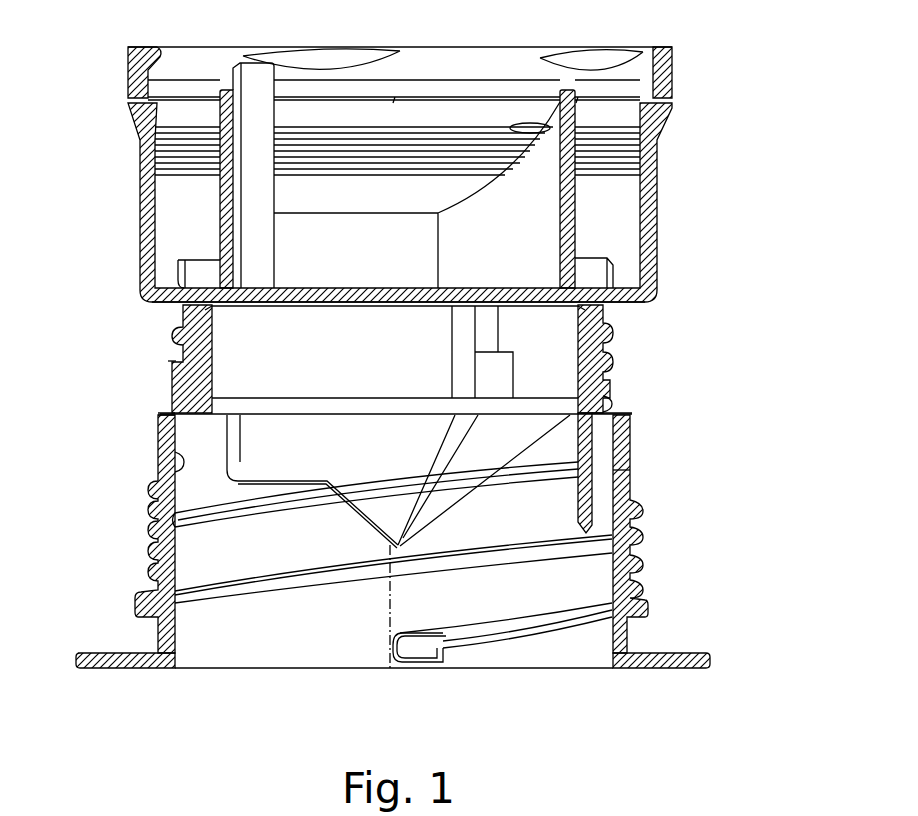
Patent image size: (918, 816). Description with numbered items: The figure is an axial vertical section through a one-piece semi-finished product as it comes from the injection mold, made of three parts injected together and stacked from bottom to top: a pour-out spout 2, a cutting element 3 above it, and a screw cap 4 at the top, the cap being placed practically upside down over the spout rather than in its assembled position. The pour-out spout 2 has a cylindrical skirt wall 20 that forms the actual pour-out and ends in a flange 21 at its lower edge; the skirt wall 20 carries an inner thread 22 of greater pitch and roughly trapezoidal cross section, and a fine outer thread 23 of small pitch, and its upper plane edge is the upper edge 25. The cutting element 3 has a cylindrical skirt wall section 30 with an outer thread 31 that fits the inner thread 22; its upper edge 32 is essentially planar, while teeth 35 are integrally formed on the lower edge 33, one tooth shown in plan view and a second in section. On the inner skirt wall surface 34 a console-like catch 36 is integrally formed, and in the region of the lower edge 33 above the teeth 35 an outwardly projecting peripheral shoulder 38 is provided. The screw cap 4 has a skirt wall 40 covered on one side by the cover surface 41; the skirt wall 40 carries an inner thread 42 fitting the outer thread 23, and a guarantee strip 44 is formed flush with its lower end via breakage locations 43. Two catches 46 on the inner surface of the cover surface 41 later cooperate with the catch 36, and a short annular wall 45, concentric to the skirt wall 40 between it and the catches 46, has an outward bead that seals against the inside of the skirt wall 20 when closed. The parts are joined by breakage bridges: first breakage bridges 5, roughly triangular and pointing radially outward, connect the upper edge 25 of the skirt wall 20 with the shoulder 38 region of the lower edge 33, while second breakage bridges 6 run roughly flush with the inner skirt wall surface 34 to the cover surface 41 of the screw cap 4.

The pour-out spout 2 is at (411, 541).
The cutting element 3 is at (412, 390).
The screw cap 4 is at (409, 181).
The first breakage bridges 5 is at (168, 413).
The second breakage bridges 6 is at (212, 308).
The cylindrical skirt wall 20 is at (160, 465).
The flange 21 is at (665, 653).
The inner thread 22 is at (218, 597).
The outer thread 23 is at (150, 542).
The upper edge 25 is at (160, 418).
The cylindrical skirt wall section 30 is at (603, 357).
The outer thread 31 is at (183, 342).
The upper edge 32 is at (183, 312).
The lower edge 33 is at (210, 412).
The inner skirt wall surface 34 is at (555, 343).
The teeth 35 is at (555, 502).
The catch 36 is at (475, 362).
The shoulder 38 is at (612, 405).
The skirt wall 40 is at (150, 217).
The cover surface 41 is at (170, 302).
The inner thread 42 is at (160, 145).
The breakage locations 43 is at (145, 98).
The guarantee strip 44 is at (132, 66).
The annular wall 45 is at (178, 270).
The catches 46 is at (222, 190).